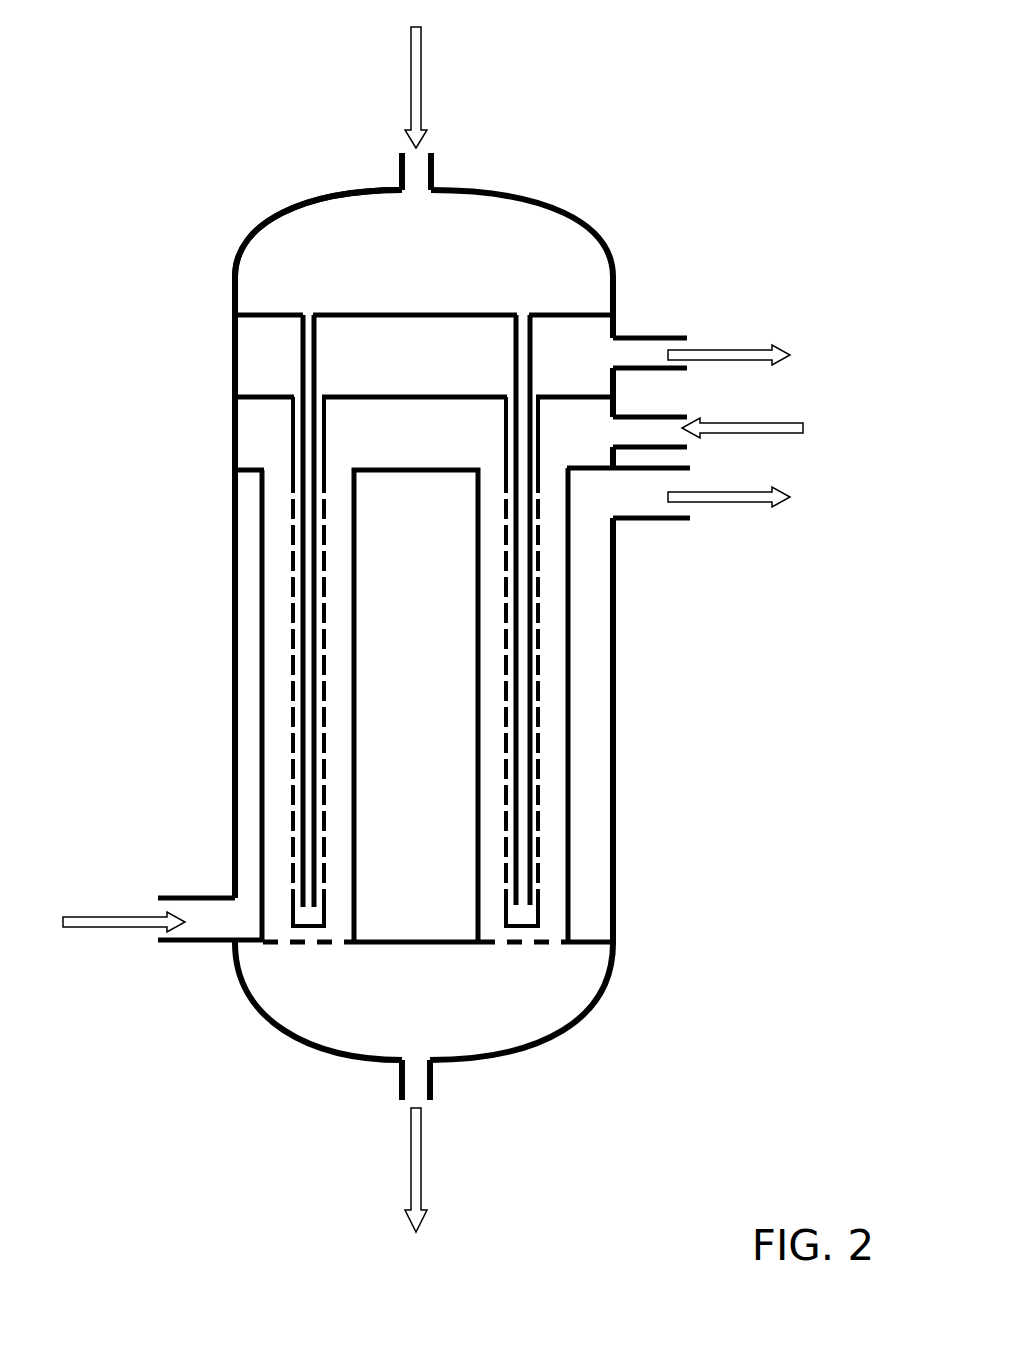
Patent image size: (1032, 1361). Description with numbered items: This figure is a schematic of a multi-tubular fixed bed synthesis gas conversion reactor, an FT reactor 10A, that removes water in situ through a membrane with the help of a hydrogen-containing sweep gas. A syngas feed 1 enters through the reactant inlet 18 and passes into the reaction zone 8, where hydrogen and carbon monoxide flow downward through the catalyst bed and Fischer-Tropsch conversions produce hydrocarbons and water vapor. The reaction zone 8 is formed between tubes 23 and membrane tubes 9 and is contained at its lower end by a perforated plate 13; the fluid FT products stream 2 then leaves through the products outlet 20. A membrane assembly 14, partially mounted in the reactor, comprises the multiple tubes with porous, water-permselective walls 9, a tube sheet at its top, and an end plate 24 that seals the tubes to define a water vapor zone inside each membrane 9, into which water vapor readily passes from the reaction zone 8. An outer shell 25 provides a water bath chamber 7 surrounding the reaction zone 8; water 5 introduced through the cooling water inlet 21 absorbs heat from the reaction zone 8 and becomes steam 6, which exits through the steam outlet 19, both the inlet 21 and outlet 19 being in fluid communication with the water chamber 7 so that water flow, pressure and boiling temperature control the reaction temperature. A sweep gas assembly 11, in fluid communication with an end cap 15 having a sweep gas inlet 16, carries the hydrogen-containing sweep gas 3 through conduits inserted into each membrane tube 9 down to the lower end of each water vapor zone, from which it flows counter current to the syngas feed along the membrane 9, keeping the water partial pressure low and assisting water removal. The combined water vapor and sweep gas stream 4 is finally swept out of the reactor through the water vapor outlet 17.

The syngas feed 1 is at (780, 423).
The fluid FT products stream 2 is at (408, 1135).
The hydrogen-containing sweep gas 3 is at (418, 78).
The combined water vapor and sweep gas stream 4 is at (755, 350).
The water 5 is at (102, 915).
The steam 6 is at (766, 492).
The water bath chamber 7 is at (237, 577).
The reaction zone 8 is at (342, 755).
The membrane tube 9 is at (538, 660).
The FT reactor 10A is at (668, 164).
The sweep gas assembly 11 is at (303, 368).
The perforated plate 13 is at (545, 945).
The membrane assembly 14 is at (263, 397).
The end cap 15 is at (253, 237).
The sweep gas inlet 16 is at (402, 172).
The water vapor outlet 17 is at (670, 337).
The reactant inlet 18 is at (657, 425).
The steam outlet 19 is at (677, 520).
The products outlet 20 is at (432, 1083).
The cooling water inlet 21 is at (173, 945).
The tube 23 is at (263, 512).
The end plate 24 is at (313, 927).
The outer shell 25 is at (617, 855).